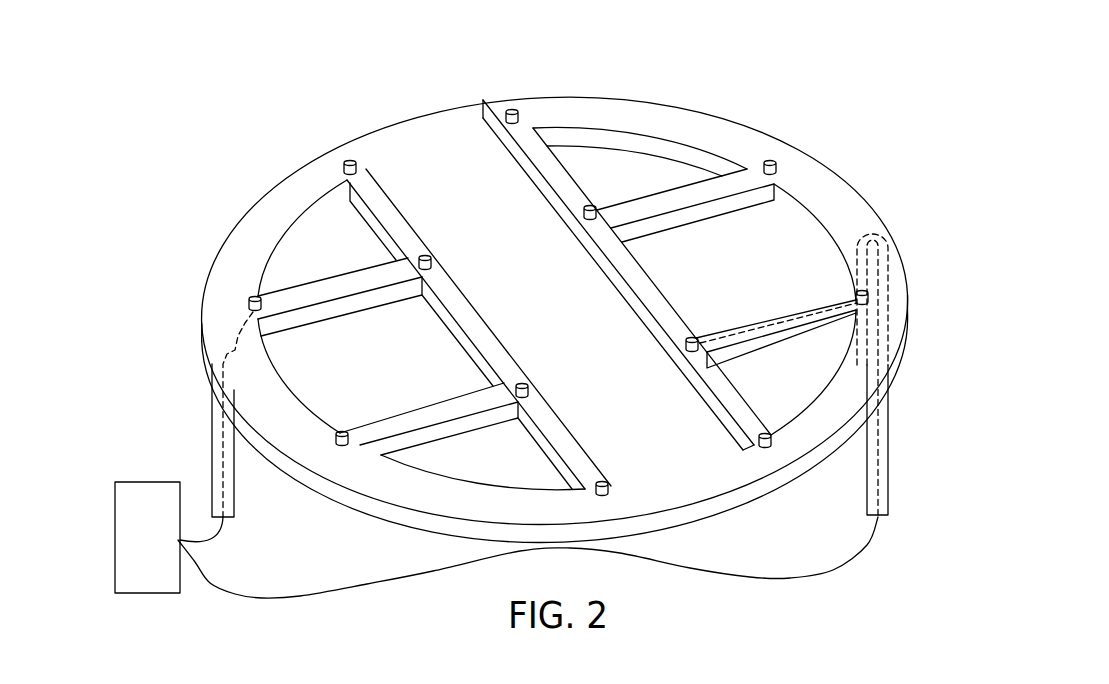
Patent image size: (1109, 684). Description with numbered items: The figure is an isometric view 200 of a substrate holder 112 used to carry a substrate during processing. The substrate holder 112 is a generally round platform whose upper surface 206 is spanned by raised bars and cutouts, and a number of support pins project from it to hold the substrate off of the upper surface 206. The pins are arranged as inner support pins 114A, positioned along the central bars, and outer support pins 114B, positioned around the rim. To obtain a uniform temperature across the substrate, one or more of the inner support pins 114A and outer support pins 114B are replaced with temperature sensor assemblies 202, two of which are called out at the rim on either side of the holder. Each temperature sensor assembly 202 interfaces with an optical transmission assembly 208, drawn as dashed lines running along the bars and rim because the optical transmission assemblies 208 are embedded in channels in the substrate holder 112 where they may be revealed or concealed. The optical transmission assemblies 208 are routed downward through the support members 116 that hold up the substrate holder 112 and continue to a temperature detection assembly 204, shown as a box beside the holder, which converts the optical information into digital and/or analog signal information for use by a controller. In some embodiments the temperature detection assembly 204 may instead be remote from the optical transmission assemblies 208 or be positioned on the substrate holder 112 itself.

The isometric view 200 is at (802, 57).
The substrate holder 112 is at (903, 369).
The upper surface 206 is at (683, 123).
The inner support pins 114A is at (590, 205).
The outer support pins 114B is at (512, 108).
The temperature sensor assemblies 202 is at (258, 297).
The optical transmission assemblies 208 is at (236, 332).
The support members 116 is at (212, 415).
The temperature detection assemblies 204 is at (164, 548).